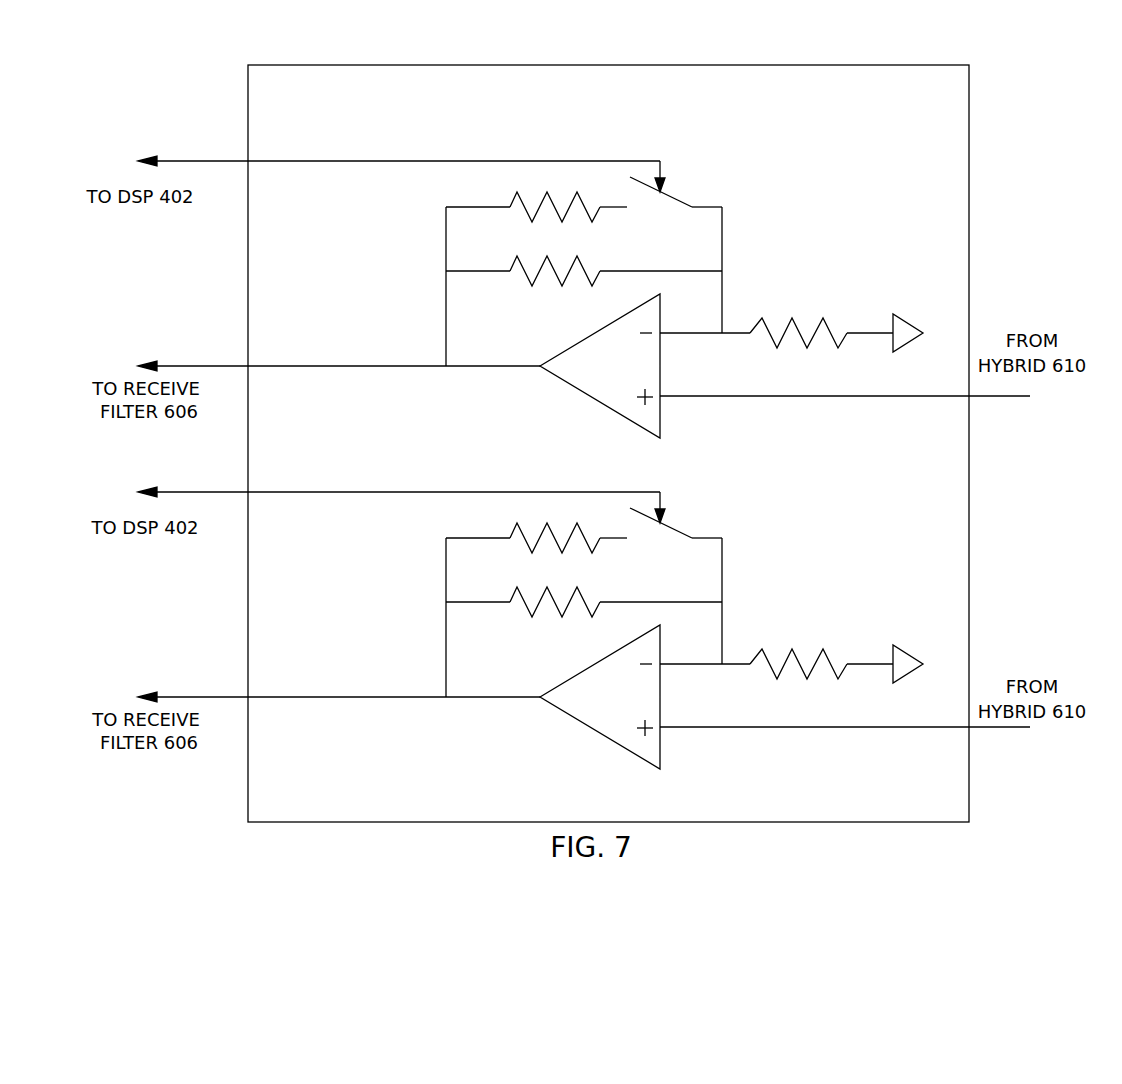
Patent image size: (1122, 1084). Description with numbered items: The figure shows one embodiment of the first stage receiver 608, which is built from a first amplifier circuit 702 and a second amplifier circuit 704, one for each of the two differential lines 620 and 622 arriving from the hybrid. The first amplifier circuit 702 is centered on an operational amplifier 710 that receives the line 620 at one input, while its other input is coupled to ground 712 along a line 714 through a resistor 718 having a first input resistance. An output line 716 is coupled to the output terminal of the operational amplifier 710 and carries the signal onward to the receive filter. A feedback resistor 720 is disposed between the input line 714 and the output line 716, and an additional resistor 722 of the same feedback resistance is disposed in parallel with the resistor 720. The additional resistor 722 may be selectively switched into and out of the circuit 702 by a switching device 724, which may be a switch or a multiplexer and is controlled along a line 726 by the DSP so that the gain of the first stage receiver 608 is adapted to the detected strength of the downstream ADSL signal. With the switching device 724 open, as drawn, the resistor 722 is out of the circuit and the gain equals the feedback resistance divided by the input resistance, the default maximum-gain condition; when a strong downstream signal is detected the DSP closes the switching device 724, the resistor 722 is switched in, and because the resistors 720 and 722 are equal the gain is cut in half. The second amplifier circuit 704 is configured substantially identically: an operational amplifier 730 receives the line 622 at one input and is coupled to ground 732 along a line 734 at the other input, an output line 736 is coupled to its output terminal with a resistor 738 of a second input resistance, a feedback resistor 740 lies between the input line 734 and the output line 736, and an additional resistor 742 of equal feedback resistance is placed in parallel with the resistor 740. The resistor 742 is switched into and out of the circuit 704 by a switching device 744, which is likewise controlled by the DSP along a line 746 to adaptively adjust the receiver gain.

The first stage receiver 608 is at (770, 55).
The first amplifier circuit 702 is at (764, 444).
The second amplifier circuit 704 is at (797, 549).
The operational amplifier 710 is at (567, 382).
The ground 712 is at (893, 314).
The line 714 is at (743, 333).
The output line 716 is at (472, 366).
The resistor 718 is at (792, 318).
The resistor 720 is at (510, 271).
The additional resistor 722 is at (509, 207).
The switching device 724 is at (678, 200).
The line 726 is at (409, 160).
The differential line 620 is at (1001, 396).
The differential line 622 is at (1001, 727).
The operational amplifier 730 is at (575, 713).
The ground 732 is at (893, 645).
The line 734 is at (733, 664).
The output line 736 is at (487, 697).
The resistor 738 is at (792, 649).
The resistor 740 is at (510, 602).
The additional resistor 742 is at (509, 538).
The switching device 744 is at (678, 531).
The line 746 is at (322, 492).